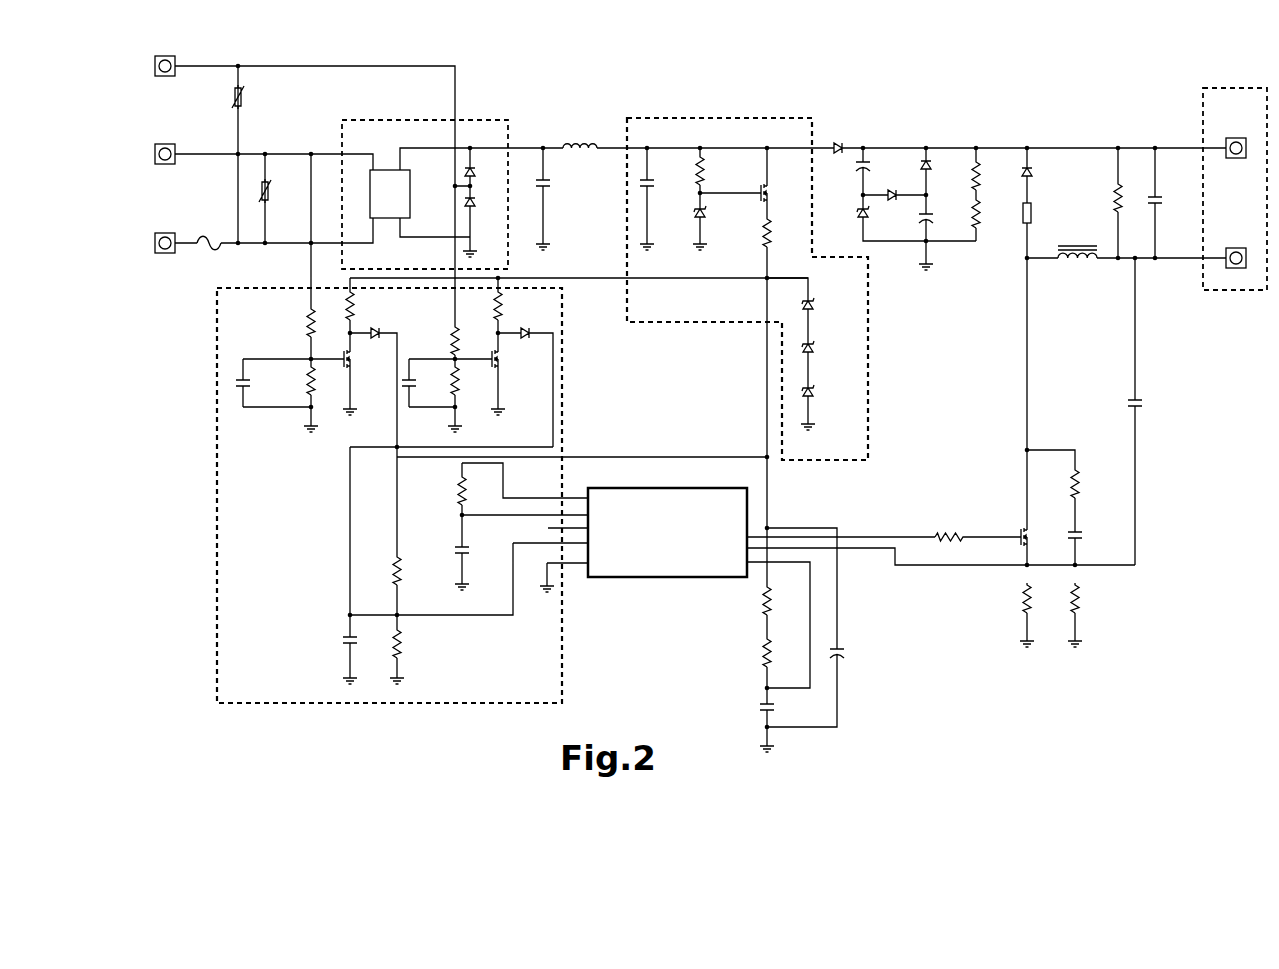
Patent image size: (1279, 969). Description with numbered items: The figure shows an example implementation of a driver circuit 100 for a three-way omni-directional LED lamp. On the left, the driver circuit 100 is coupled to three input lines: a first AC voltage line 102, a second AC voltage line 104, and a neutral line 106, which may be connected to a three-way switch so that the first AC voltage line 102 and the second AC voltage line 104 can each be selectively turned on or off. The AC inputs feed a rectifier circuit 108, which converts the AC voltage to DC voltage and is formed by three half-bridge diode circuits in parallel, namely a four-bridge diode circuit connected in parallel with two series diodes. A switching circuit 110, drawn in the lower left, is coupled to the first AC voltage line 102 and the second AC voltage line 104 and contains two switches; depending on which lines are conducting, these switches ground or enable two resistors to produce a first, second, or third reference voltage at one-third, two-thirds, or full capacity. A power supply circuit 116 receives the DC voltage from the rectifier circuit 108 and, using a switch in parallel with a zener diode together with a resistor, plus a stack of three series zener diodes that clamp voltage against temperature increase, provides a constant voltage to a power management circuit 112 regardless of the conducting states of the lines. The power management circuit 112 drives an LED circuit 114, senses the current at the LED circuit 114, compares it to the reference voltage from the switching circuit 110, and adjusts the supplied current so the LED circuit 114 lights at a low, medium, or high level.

The driver circuit 100 is at (708, 403).
The first AC voltage line 102 is at (165, 76).
The second AC voltage line 104 is at (165, 164).
The neutral line 106 is at (165, 253).
The rectifier circuit 108 is at (477, 120).
The switching circuit 110 is at (307, 706).
The power management circuit 112 is at (676, 583).
The LED circuit 114 is at (1240, 292).
The power supply circuit 116 is at (870, 376).